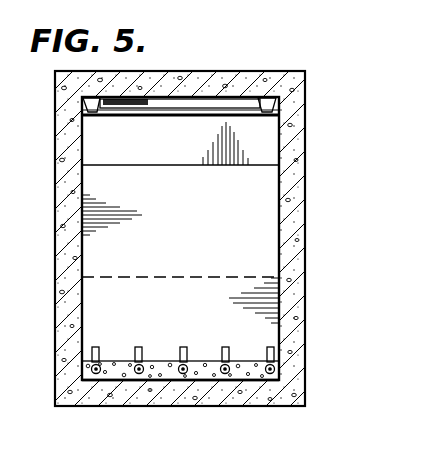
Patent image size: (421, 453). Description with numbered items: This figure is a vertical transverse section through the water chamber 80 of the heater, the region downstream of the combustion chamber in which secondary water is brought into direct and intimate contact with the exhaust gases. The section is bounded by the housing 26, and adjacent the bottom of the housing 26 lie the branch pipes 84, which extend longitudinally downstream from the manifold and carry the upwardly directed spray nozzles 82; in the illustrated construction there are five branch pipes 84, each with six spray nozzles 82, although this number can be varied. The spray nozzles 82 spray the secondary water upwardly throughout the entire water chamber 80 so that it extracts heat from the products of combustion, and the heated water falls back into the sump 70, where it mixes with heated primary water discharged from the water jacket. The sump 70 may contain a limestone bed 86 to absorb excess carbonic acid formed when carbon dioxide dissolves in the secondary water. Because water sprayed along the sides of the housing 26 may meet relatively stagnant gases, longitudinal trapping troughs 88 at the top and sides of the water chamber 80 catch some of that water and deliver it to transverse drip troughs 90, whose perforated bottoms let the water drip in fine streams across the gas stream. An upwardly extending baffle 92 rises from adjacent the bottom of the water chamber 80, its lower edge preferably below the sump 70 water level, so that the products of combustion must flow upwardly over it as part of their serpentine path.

The housing 26 is at (237, 78).
The sump 70 is at (120, 379).
The water chamber 80 is at (268, 229).
The spray nozzles 82 is at (141, 355).
The branch pipes 84 is at (143, 377).
The limestone bed 86 is at (209, 381).
The longitudinal troughs 88 is at (82, 110).
The transverse troughs 90 is at (163, 114).
The upwardly extending baffles 92 is at (265, 190).